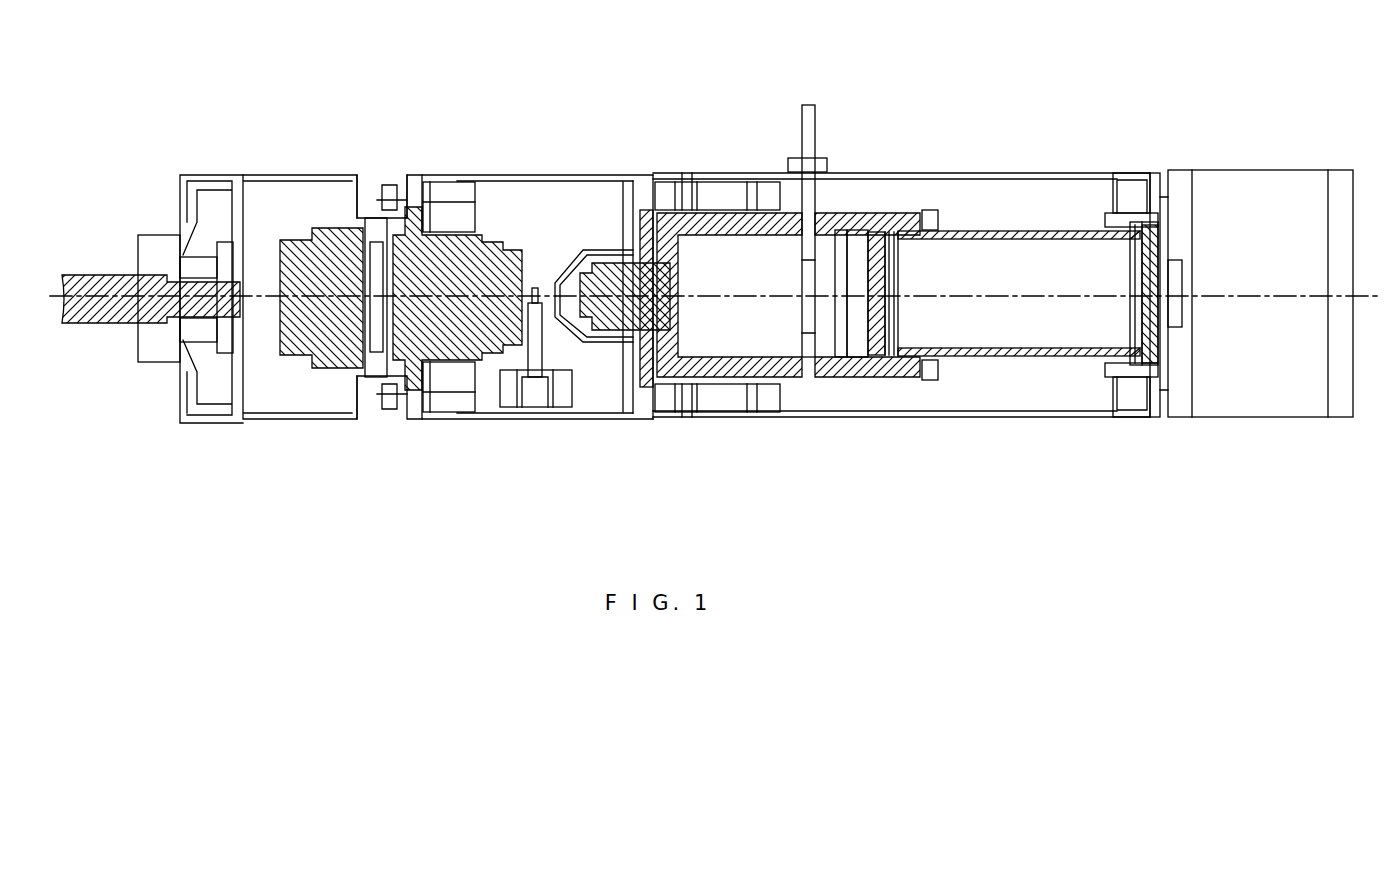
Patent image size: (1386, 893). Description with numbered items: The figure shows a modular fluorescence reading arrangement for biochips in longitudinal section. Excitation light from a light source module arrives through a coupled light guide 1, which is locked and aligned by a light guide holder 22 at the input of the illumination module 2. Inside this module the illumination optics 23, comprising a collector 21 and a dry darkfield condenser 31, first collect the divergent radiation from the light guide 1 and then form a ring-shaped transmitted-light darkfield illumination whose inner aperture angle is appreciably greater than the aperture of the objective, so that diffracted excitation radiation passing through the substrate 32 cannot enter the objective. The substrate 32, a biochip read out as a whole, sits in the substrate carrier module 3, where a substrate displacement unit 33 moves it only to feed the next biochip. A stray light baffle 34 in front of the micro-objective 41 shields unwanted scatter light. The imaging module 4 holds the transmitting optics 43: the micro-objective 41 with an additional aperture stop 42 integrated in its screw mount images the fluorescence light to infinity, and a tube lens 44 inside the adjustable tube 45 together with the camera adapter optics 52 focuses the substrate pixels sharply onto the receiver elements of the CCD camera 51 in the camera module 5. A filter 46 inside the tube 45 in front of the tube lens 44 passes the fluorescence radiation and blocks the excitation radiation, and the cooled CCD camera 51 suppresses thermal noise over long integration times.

The light guide 1 is at (177, 280).
The illumination module 2 is at (255, 175).
The collector 21 is at (327, 350).
The light guide holder 22 is at (150, 358).
The illumination optics 23 is at (350, 258).
The substrate carrier module 3 is at (538, 175).
The dry darkfield condenser 31 is at (452, 355).
The substrate 32 is at (540, 283).
The substrate displacement unit 33 is at (518, 388).
The stray light baffle 34 is at (607, 347).
The imaging module 4 is at (948, 168).
The micro-objective 41 is at (635, 268).
The aperture stop 42 is at (680, 320).
The transmitting optics 43 is at (645, 247).
The tube lens 44 is at (880, 357).
The tube 45 is at (910, 372).
The filter 46 is at (815, 320).
The camera module 5 is at (1288, 168).
The CCD camera 51 is at (1193, 193).
The camera adapter optics 52 is at (1157, 330).